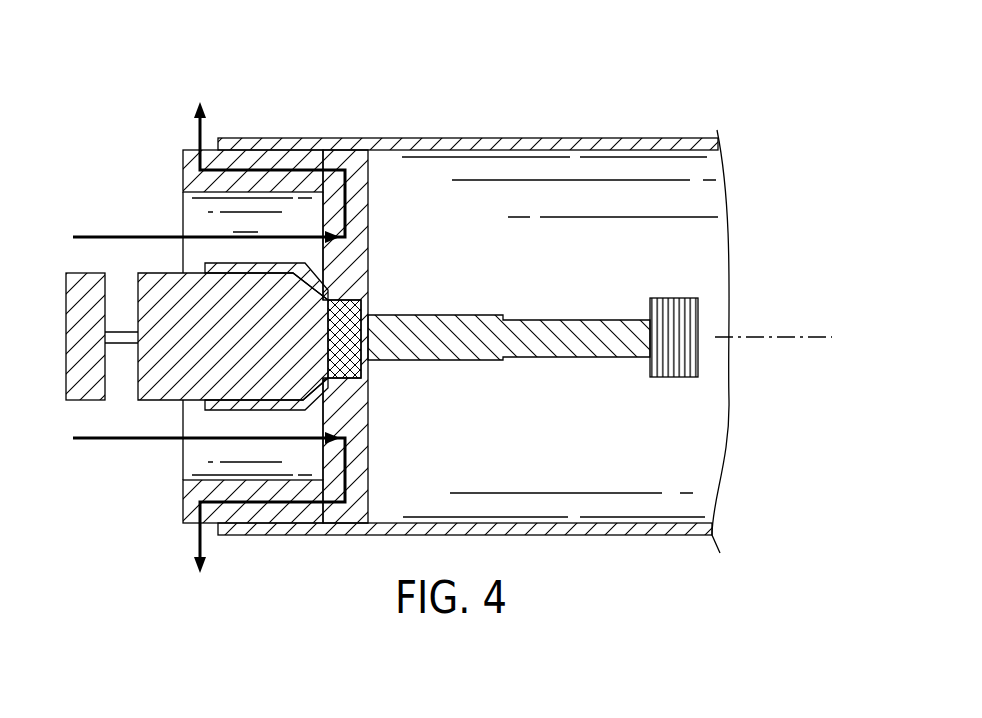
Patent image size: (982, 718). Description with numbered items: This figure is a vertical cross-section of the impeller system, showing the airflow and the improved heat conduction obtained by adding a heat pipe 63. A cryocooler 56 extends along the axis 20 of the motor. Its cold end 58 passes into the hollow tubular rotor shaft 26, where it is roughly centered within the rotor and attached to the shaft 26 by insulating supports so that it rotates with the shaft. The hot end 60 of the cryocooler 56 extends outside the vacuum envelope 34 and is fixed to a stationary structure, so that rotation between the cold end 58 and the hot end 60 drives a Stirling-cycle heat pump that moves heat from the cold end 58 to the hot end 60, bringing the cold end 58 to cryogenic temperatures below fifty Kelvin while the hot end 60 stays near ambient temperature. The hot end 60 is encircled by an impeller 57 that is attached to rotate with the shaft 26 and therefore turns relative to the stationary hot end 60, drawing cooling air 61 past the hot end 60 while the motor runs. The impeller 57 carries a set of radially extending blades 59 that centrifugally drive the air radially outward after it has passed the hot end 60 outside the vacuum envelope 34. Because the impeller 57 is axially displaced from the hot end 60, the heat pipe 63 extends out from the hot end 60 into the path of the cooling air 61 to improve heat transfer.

The axis 20 is at (773, 337).
The tubular rotor shaft 26 is at (635, 152).
The vacuum envelope 34 is at (609, 466).
The cryocooler 56 is at (244, 354).
The impeller 57 is at (268, 148).
The cold end 58 is at (655, 298).
The radially extending blades 59 is at (347, 160).
The hot end 60 is at (352, 340).
The cooling air 61 is at (137, 237).
The heat pipe 63 is at (328, 296).